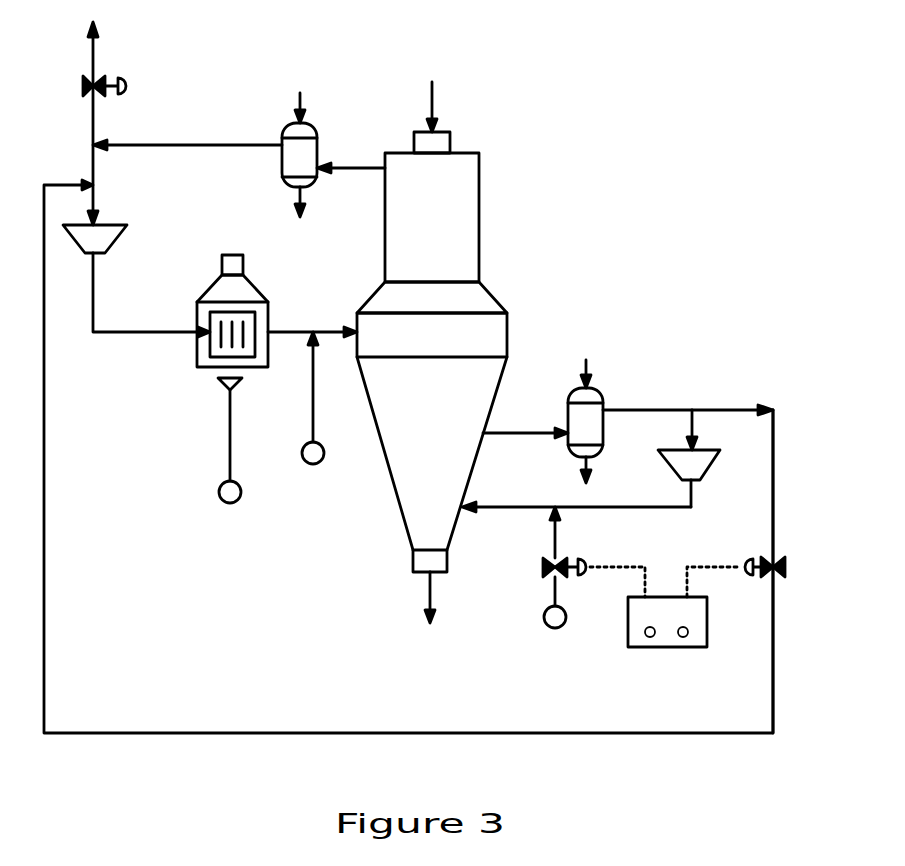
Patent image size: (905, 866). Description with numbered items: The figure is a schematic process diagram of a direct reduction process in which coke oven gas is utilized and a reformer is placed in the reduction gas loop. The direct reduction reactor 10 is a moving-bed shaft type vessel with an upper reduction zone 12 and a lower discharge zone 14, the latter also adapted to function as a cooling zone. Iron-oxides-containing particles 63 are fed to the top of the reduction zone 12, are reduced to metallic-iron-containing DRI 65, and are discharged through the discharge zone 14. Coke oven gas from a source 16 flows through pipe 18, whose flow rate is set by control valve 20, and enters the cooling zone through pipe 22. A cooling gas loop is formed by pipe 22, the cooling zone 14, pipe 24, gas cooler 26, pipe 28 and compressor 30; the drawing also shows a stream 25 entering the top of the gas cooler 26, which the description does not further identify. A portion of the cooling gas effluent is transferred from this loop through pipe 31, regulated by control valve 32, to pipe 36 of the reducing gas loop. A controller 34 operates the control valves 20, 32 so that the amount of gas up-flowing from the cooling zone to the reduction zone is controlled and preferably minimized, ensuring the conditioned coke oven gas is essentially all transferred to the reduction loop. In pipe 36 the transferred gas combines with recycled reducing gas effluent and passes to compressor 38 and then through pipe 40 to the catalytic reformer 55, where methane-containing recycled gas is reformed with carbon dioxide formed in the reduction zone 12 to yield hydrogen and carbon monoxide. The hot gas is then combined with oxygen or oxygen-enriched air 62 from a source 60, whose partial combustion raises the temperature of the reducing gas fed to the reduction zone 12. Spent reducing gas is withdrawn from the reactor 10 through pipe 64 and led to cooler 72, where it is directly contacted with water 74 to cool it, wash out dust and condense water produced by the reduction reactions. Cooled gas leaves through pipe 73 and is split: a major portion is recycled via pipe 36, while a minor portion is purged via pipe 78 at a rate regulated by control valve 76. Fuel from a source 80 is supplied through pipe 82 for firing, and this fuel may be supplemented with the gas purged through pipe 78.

The direct reduction reactor 10 is at (449, 352).
The upper reduction zone 12 is at (455, 212).
The lower discharge zone 14 is at (455, 462).
The COG source 16 is at (546, 627).
The pipe 18 is at (553, 598).
The control valve 20 is at (563, 557).
The pipe 22 is at (493, 507).
The pipe 24 is at (503, 432).
The inlet stream 25 is at (583, 370).
The gas cooler 26 is at (605, 397).
The pipe 28 is at (687, 420).
The compressor 30 is at (667, 460).
The pipe 31 is at (773, 512).
The control valve 32 is at (782, 558).
The controller 34 is at (682, 652).
The pipe 36 is at (90, 172).
The compressor 38 is at (113, 223).
The pipe 40 is at (97, 297).
The catalytic reformer 55 is at (257, 287).
The oxygen source 60 is at (302, 457).
The oxygen or oxygen-enriched air 62 is at (308, 380).
The iron-oxides-containing particles 63 is at (437, 103).
The pipe 64 is at (367, 173).
The DRI 65 is at (428, 593).
The cooler 72 is at (318, 147).
The pipe 73 is at (233, 143).
The water 74 is at (297, 100).
The control valve 76 is at (130, 82).
The pipe 78 is at (97, 60).
The fuel source 80 is at (219, 493).
The pipe 82 is at (230, 440).